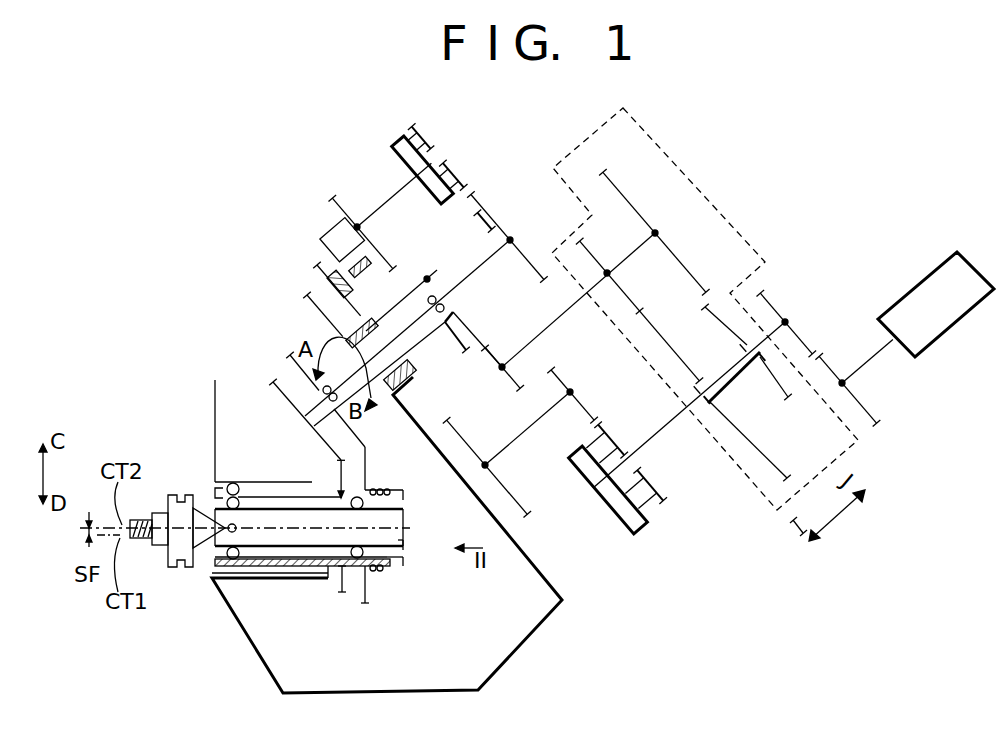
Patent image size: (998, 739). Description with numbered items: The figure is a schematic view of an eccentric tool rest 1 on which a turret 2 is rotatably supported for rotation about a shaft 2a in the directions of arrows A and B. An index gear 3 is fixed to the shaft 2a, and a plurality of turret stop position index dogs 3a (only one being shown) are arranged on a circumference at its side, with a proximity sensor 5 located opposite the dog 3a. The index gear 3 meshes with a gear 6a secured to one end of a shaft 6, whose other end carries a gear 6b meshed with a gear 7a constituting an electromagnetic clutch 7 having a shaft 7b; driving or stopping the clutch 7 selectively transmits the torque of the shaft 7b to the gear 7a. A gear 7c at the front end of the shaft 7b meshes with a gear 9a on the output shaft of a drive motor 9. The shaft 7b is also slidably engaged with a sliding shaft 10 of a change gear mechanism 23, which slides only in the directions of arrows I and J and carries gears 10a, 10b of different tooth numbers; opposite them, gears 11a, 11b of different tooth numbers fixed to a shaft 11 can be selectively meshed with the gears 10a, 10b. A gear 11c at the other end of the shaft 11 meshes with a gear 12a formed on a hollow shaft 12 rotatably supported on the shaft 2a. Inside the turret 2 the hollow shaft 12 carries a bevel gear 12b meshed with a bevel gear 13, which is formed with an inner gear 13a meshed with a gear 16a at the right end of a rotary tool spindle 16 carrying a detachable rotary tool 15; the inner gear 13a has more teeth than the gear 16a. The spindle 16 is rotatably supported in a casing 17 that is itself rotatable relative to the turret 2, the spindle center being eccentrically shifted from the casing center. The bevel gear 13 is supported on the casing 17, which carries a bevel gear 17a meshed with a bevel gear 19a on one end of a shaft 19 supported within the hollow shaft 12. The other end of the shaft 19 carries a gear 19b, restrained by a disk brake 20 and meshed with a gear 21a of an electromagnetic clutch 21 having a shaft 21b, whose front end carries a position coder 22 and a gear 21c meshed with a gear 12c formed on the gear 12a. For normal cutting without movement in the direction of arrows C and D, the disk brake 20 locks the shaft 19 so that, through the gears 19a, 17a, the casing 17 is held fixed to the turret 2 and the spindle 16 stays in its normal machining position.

The eccentric tool rest 1 is at (765, 162).
The turret 2 is at (518, 648).
The shaft 2a is at (413, 398).
The index gear 3 is at (437, 392).
The turret stop position index dog 3a is at (350, 291).
The proximity sensor 5 is at (367, 272).
The shaft 6 is at (513, 440).
The gear 6a is at (505, 488).
The gear 6b is at (585, 405).
The electromagnetic clutch 7 is at (608, 510).
The gear 7a is at (612, 420).
The shaft 7b is at (666, 428).
The gear 7c is at (773, 300).
The drive motor 9 is at (955, 323).
The gear 9a is at (858, 400).
The sliding shaft 10 is at (742, 383).
The gear 10a is at (760, 451).
The gear 10b is at (789, 397).
The shaft 11 is at (547, 328).
The gear 11a is at (622, 286).
The gear 11b is at (667, 242).
The gear 11c is at (510, 375).
The hollow shaft 12 is at (418, 337).
The gear 12a is at (480, 323).
The bevel gear 12b is at (351, 423).
The gear 12c is at (462, 352).
The bevel gear 13 is at (376, 467).
The inner gear 13a is at (405, 495).
The rotary tool 15 is at (170, 568).
The rotary tool spindle 16 is at (287, 550).
The gear 16a is at (405, 548).
The casing 17 is at (330, 585).
The bevel gear 17a is at (341, 478).
The shaft 19 is at (470, 273).
The bevel gear 19a is at (287, 400).
The gear 19b is at (519, 251).
The disk brake 20 is at (488, 207).
The electromagnetic clutch 21 is at (393, 148).
The gear 21a is at (444, 164).
The shaft 21b is at (387, 203).
The gear 21c is at (340, 198).
The position coder 22 is at (323, 228).
The change gear mechanism 23 is at (713, 205).